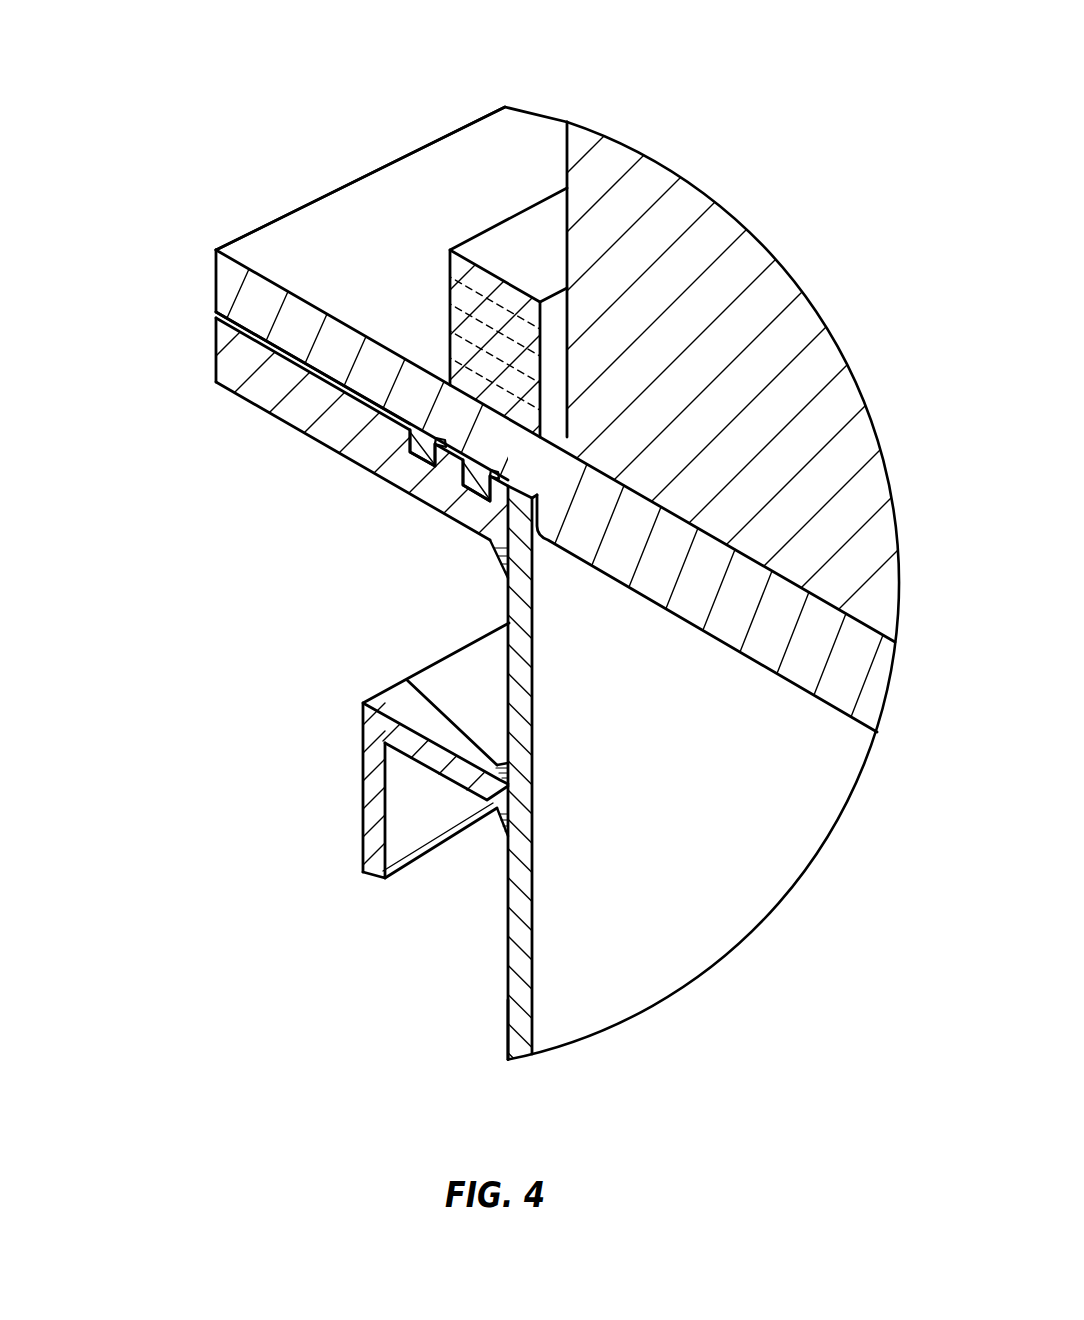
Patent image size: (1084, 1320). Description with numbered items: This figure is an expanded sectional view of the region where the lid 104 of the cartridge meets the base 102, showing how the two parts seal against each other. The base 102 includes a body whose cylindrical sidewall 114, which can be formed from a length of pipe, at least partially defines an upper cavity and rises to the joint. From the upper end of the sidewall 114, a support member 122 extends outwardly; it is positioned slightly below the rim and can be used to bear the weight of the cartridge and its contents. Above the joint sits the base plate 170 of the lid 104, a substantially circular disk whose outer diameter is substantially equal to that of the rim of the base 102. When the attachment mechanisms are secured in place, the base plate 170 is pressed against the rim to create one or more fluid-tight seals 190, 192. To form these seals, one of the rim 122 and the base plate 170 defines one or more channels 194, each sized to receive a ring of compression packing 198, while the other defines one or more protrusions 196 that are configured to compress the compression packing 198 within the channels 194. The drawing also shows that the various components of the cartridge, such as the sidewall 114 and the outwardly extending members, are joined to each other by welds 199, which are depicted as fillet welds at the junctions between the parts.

The base 102 is at (290, 963).
The lid 104 is at (218, 100).
The sidewall 114 is at (520, 642).
The support member 122 is at (253, 369).
The base plate 170 is at (254, 300).
The fluid-tight seal 190 is at (480, 452).
The fluid-tight seal 192 is at (420, 396).
The channel 194 is at (493, 505).
The protrusion 196 is at (408, 430).
The compression packing 198 is at (432, 467).
The weld 199 is at (497, 556).